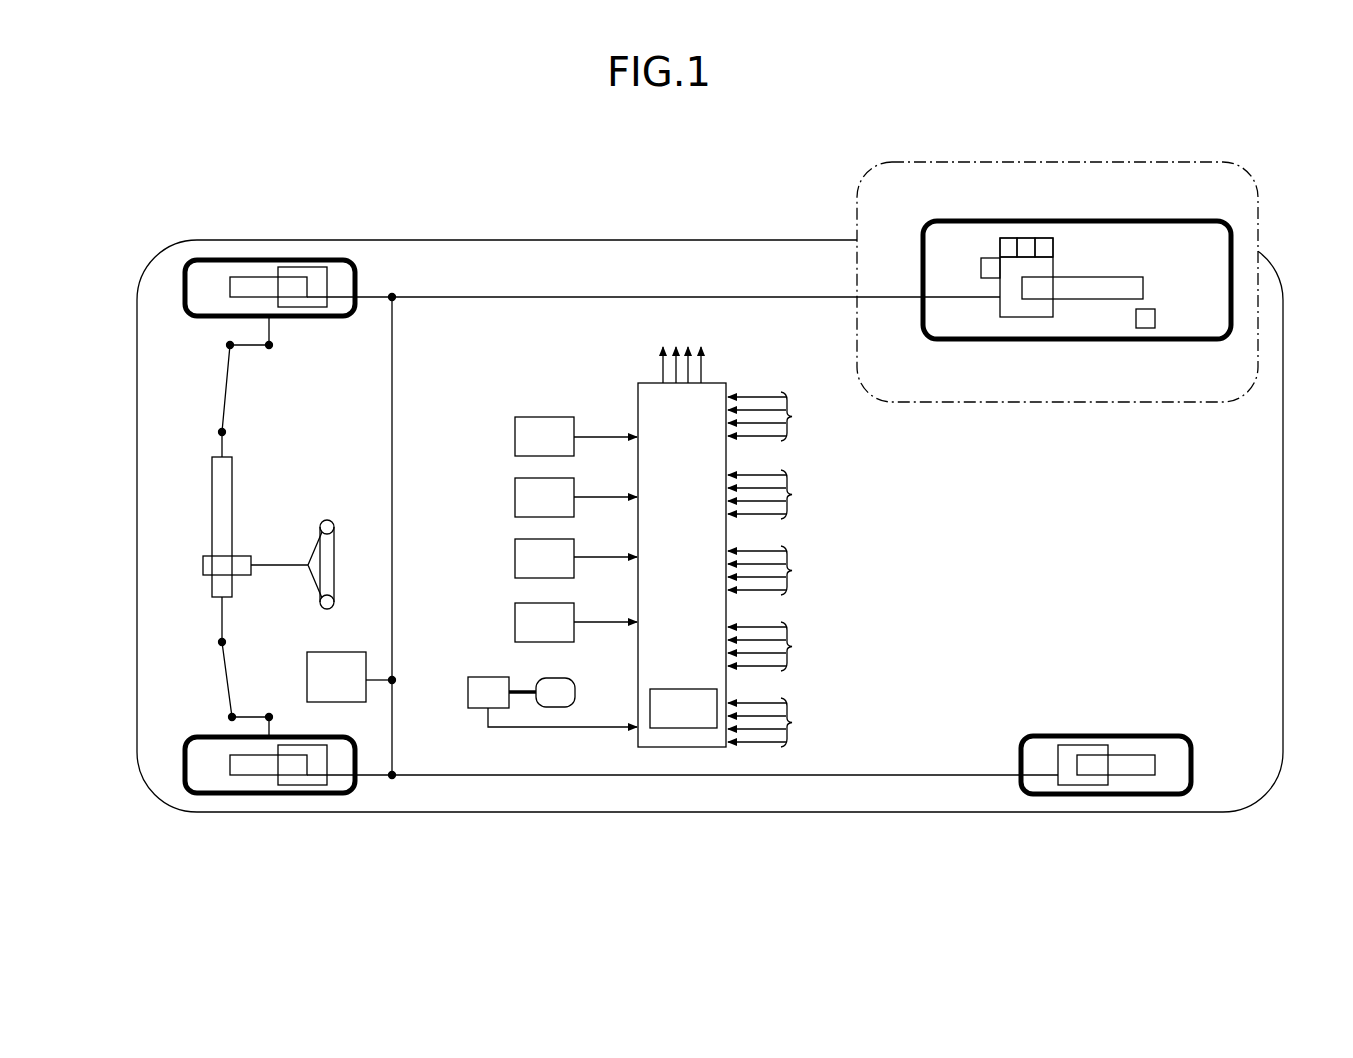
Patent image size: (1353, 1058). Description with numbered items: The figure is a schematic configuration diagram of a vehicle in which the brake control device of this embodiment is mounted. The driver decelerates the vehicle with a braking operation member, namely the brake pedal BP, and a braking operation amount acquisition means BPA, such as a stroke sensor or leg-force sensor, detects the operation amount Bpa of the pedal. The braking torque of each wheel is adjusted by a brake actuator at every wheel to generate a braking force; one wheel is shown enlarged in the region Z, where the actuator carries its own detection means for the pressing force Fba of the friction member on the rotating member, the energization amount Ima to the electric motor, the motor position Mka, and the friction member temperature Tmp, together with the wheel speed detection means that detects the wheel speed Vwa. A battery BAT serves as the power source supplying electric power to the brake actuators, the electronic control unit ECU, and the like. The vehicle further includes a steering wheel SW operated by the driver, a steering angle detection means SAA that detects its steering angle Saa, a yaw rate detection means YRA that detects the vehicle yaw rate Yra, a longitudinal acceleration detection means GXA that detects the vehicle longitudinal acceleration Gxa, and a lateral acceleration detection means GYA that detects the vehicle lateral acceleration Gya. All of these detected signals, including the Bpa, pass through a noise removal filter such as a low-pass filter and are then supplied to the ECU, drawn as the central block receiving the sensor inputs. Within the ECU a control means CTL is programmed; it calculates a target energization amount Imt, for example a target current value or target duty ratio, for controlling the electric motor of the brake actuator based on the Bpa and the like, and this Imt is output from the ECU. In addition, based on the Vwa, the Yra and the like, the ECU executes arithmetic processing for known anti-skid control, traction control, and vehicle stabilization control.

The enlarged wheel region Z is at (1059, 163).
The steering wheel SW is at (336, 562).
The battery BAT is at (349, 677).
The electronic control unit ECU is at (682, 565).
The control means CTL is at (683, 708).
The yaw rate detection means YRA is at (544, 436).
The longitudinal acceleration detection means GXA is at (544, 497).
The lateral acceleration detection means GYA is at (544, 558).
The steering angle detection means SAA is at (544, 622).
The braking operation amount acquisition means BPA is at (478, 677).
The brake pedal BP is at (542, 692).
The target energization amount Imt is at (682, 351).
The temperature Tmp is at (761, 381).
The pressing force Fba is at (762, 462).
The position Mka is at (762, 539).
The energization amount Ima is at (760, 615).
The wheel speed Vwa is at (762, 692).
The yaw rate Yra is at (605, 423).
The vehicle longitudinal acceleration Gxa is at (605, 484).
The vehicle lateral acceleration Gya is at (605, 544).
The steering angle Saa is at (605, 609).
The operation amount Bpa is at (562, 714).